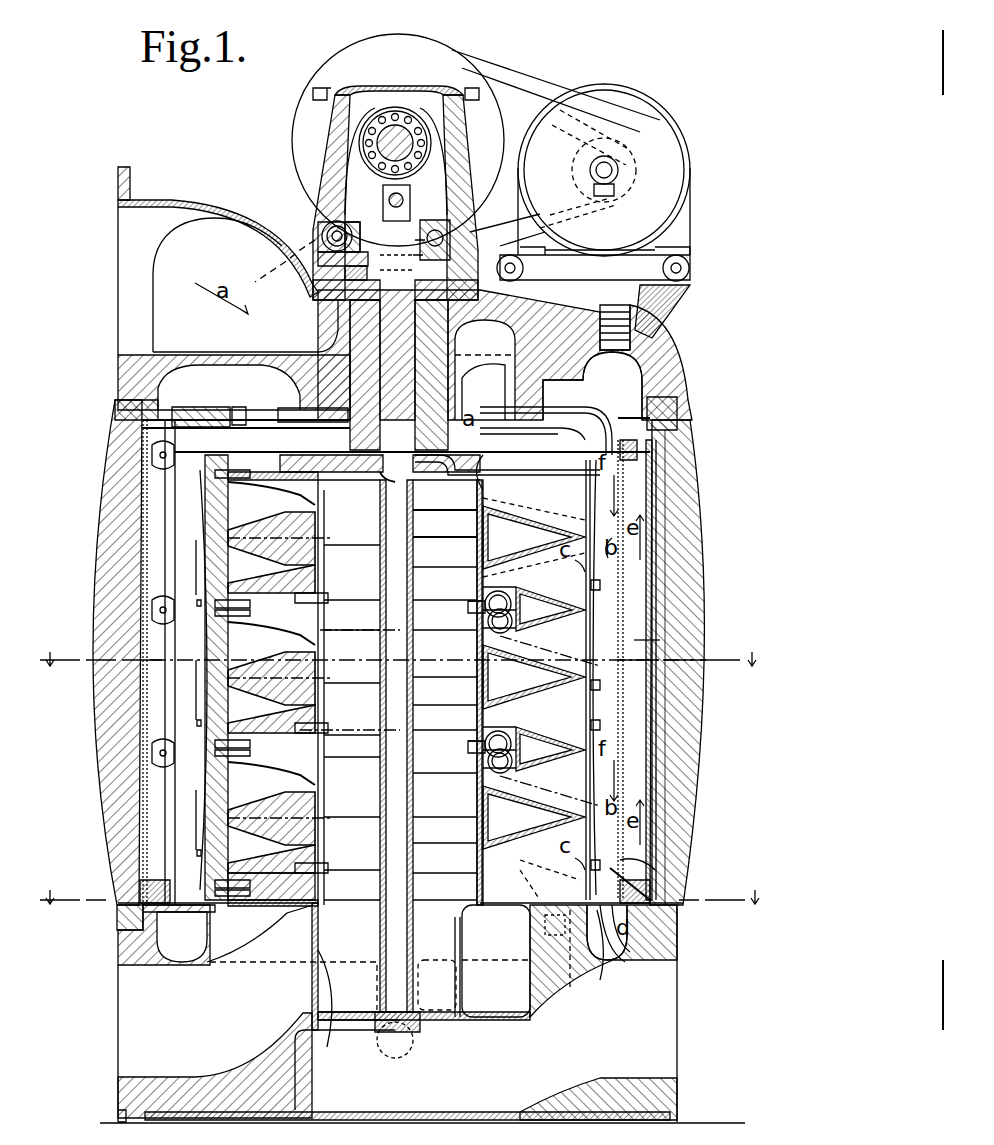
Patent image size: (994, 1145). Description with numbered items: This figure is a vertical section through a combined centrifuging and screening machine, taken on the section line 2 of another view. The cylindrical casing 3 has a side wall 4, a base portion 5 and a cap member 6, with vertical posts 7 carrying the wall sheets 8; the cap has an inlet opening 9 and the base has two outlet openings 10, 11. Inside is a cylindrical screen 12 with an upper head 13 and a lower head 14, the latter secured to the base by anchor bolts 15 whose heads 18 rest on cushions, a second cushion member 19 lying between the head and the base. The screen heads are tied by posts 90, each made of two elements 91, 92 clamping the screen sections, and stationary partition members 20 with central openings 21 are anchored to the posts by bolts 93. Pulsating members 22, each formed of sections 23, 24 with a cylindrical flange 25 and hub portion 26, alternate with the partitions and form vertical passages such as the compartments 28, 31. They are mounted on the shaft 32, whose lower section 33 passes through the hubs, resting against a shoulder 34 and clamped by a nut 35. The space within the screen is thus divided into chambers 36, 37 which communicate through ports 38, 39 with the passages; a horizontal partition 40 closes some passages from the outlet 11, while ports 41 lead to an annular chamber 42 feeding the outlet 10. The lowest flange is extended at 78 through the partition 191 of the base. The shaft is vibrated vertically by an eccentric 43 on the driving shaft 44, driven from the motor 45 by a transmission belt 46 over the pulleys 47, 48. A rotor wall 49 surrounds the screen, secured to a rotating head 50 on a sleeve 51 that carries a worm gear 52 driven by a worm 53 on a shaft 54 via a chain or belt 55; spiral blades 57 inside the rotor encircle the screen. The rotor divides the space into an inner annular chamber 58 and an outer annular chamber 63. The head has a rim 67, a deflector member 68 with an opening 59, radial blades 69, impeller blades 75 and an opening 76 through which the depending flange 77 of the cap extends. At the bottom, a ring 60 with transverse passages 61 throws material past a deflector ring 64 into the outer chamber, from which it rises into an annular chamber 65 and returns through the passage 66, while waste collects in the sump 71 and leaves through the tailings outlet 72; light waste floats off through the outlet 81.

The section line 2— 2 is at (397, 660).
The cylindrical casing 3 is at (397, 733).
The cylindrical side wall 4 is at (401, 902).
The base portion 5 is at (680, 948).
The cap member 6 is at (660, 355).
The vertical posts 7 is at (100, 730).
The wall sheets 8 is at (650, 812).
The inlet opening 9 is at (190, 290).
The outlet opening 10 is at (422, 1044).
The outlet opening 11 is at (411, 1013).
The screen 12 is at (600, 560).
The upper head 13 is at (360, 465).
The lower head 14 is at (263, 893).
The anchor bolts 15 is at (547, 871).
The heads of anchoring bolts 18 is at (562, 966).
The second cushion member 19 is at (273, 893).
The stationary partition members 20 is at (620, 578).
The central opening 21 is at (520, 630).
The pulsating members 22 is at (590, 487).
The lower section of pulsating member 23 is at (514, 563).
The upper section of pulsating member 24 is at (550, 524).
The central cylindrical flange 25 is at (477, 512).
The hub portion 26 is at (380, 565).
The vertical passage or compartment 28 is at (440, 858).
The vertical passage or compartment 31 is at (340, 870).
The shaft 32 is at (400, 350).
The lower section of shaft 33 is at (380, 778).
The shoulder 34 is at (413, 497).
The clamping nut 35 is at (392, 1035).
The annular chamber 36 is at (265, 685).
The annular chamber 37 is at (271, 663).
The ports 38 is at (333, 726).
The ports 39 is at (468, 618).
The horizontal partition 40 is at (436, 1030).
The ports 41 is at (456, 946).
The annular chamber 42 is at (513, 961).
The eccentric 43 is at (383, 190).
The driving shaft 44 is at (392, 140).
The motor 45 is at (640, 108).
The transmission belt 46 is at (518, 86).
The driving pulley 47 is at (433, 62).
The pulley 48 is at (590, 150).
The cylindrical wall of rotor 49 is at (640, 855).
The rotating head 50 is at (142, 425).
The sleeve 51 is at (350, 310).
The worm gear 52 is at (450, 238).
The worm 53 is at (318, 230).
The shaft 54 is at (320, 234).
The sprocket chain or belt 55 is at (320, 160).
The spiral blades 57 is at (200, 650).
The inner annular chamber 58 is at (610, 625).
The opening 59 is at (516, 445).
The ring 60 is at (660, 884).
The transverse passages 61 is at (600, 956).
The outer annular chamber 63 is at (660, 640).
The deflector ring 64 is at (163, 900).
The annular chamber 65 is at (205, 370).
The annular passage 66 is at (640, 400).
The outer rim portion 67 is at (650, 420).
The annular deflector member 68 is at (648, 436).
The radial blades or webs 69 is at (246, 412).
The annular sump 71 is at (177, 933).
The tailings outlet 72 is at (398, 1058).
The radial impeller blades 75 is at (554, 443).
The opening 76 is at (530, 405).
The depending annular flange 77 is at (518, 420).
The extension 78 is at (345, 1006).
The outlet 81 is at (615, 312).
The posts 90 is at (194, 693).
The post element 91 is at (200, 712).
The post element 92 is at (210, 782).
The bolts 93 is at (205, 752).
The partition 191 is at (505, 1022).